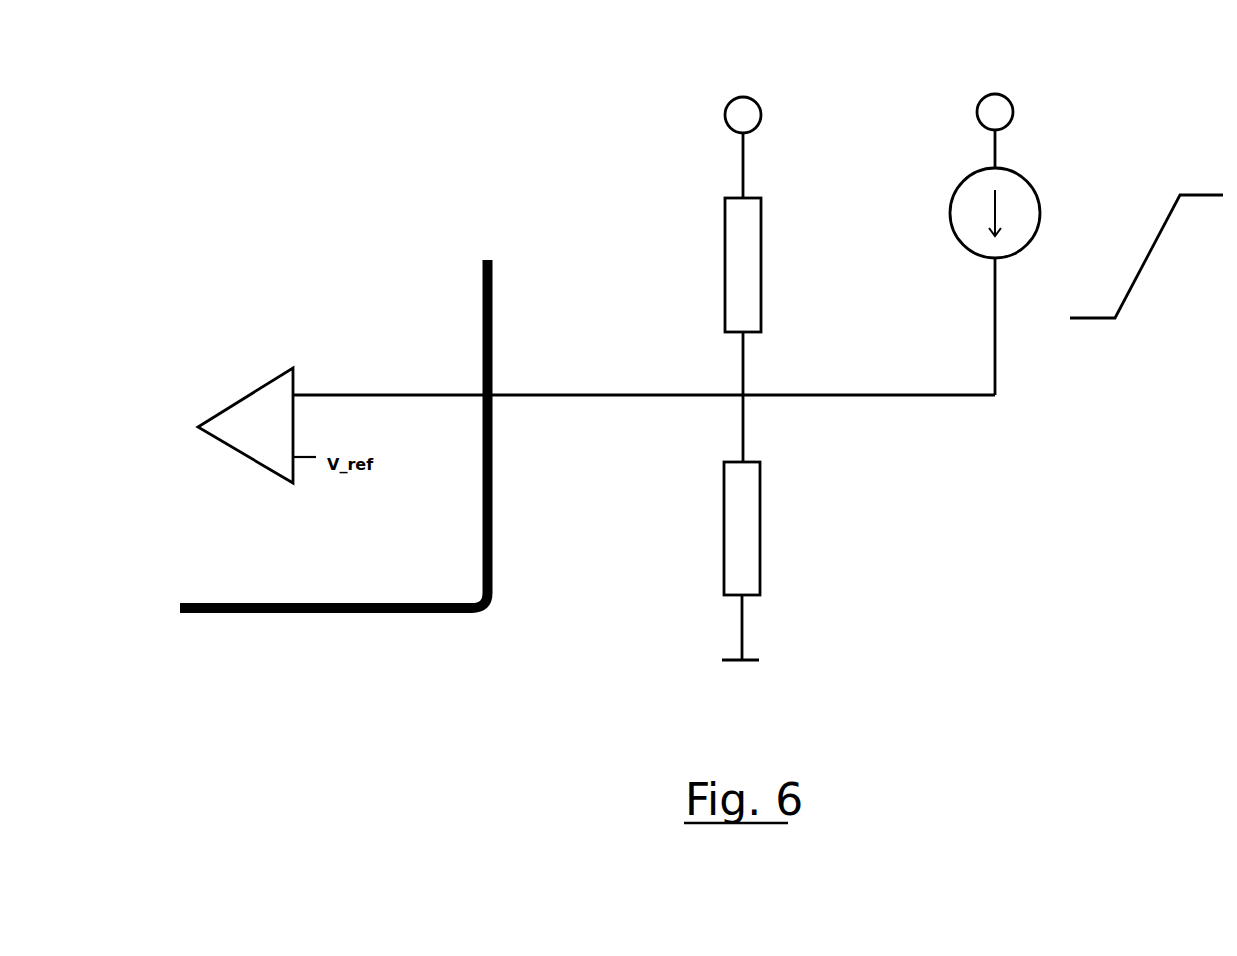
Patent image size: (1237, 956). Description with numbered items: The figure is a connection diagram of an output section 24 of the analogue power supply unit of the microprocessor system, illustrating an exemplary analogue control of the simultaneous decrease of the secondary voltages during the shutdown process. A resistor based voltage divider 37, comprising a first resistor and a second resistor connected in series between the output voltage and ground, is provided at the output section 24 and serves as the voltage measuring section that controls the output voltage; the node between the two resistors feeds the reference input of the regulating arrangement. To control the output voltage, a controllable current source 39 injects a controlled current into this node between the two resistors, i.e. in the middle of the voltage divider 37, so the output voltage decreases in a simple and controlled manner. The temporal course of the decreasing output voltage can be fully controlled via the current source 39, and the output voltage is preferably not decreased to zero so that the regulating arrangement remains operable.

The output section 24 is at (464, 144).
The resistor based voltage divider 37 is at (661, 200).
The controllable current source 39 is at (1042, 172).